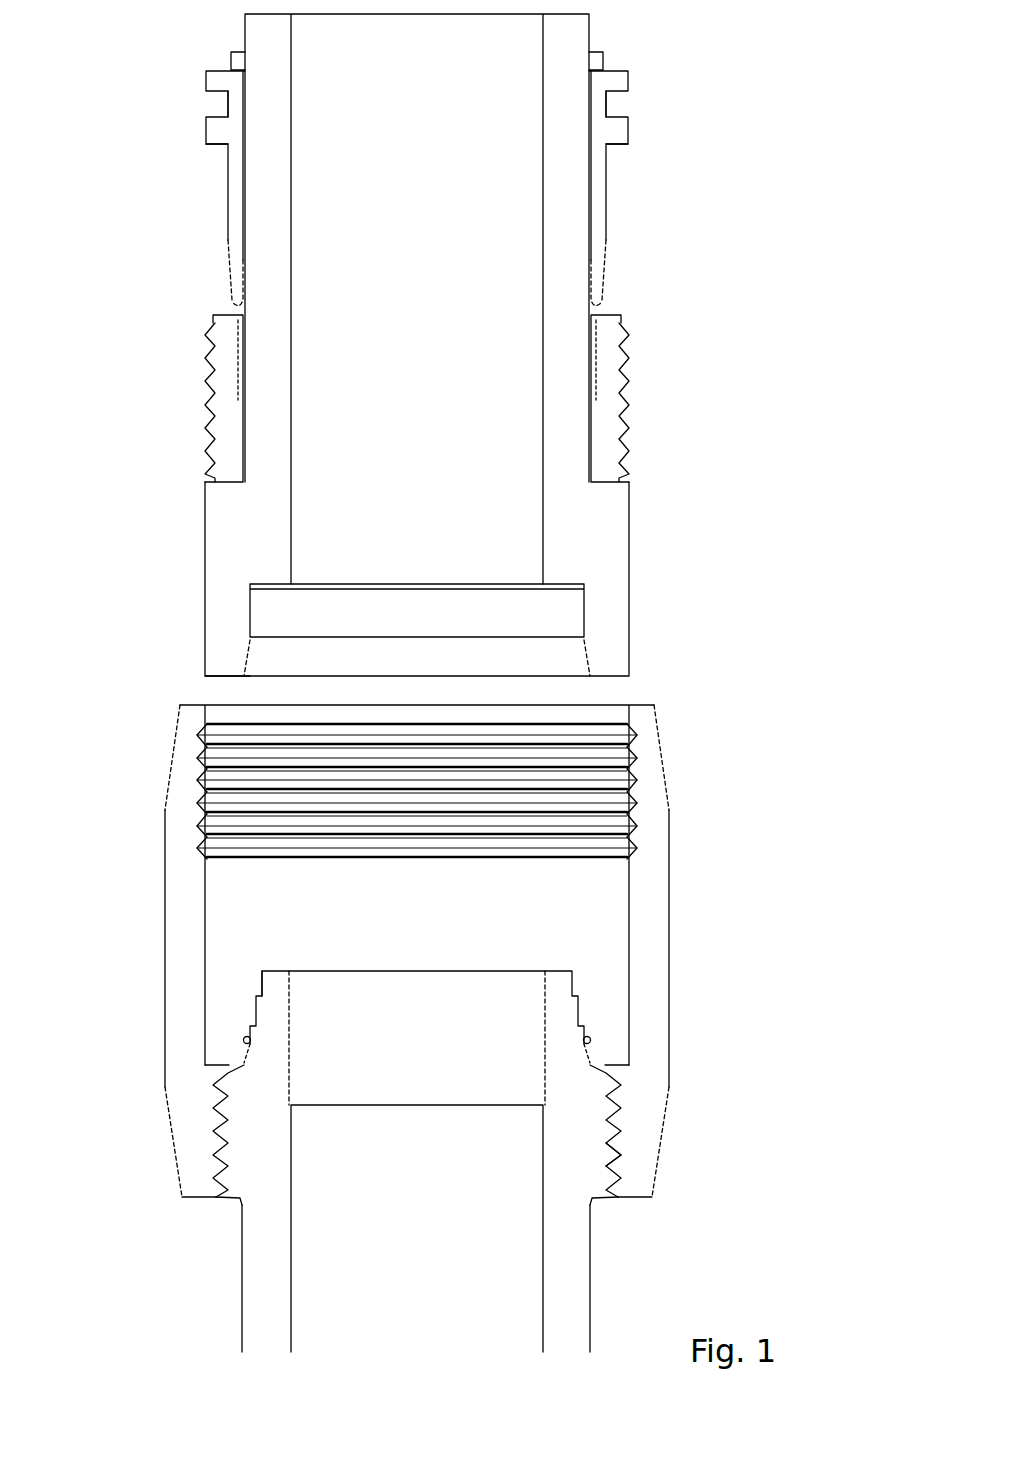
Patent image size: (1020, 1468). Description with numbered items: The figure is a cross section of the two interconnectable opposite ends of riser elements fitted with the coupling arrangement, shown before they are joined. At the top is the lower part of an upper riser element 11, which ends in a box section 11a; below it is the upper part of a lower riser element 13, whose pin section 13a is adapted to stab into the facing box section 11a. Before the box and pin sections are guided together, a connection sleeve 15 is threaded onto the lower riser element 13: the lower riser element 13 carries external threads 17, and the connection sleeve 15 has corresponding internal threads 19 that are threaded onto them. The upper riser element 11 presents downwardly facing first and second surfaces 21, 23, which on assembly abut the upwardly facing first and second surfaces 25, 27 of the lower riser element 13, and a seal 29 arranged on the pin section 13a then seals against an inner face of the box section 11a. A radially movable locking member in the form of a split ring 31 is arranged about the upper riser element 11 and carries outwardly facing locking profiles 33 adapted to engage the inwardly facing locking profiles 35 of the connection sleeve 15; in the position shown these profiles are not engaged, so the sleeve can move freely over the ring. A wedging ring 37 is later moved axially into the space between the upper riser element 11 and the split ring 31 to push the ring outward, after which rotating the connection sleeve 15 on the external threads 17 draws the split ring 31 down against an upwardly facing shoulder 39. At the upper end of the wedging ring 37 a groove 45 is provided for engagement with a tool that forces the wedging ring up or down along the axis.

The upper riser element 11 is at (570, 233).
The box section 11a is at (610, 612).
The lower riser element 13 is at (572, 1287).
The pin section 13a is at (553, 1005).
The connection sleeve 15 is at (648, 902).
The external threads 17 is at (608, 1105).
The internal threads 19 is at (608, 1138).
The first surface 21 is at (270, 585).
The second surface 23 is at (222, 677).
The first surface 25 is at (272, 970).
The second surface 27 is at (235, 1062).
The seal 29 is at (585, 1040).
The split ring 31 is at (607, 350).
The outwardly facing locking profiles 33 is at (618, 422).
The inwardly facing locking profiles 35 is at (632, 778).
The wedging ring 37 is at (592, 163).
The upwardly facing shoulder 39 is at (228, 482).
The groove 45 is at (610, 105).